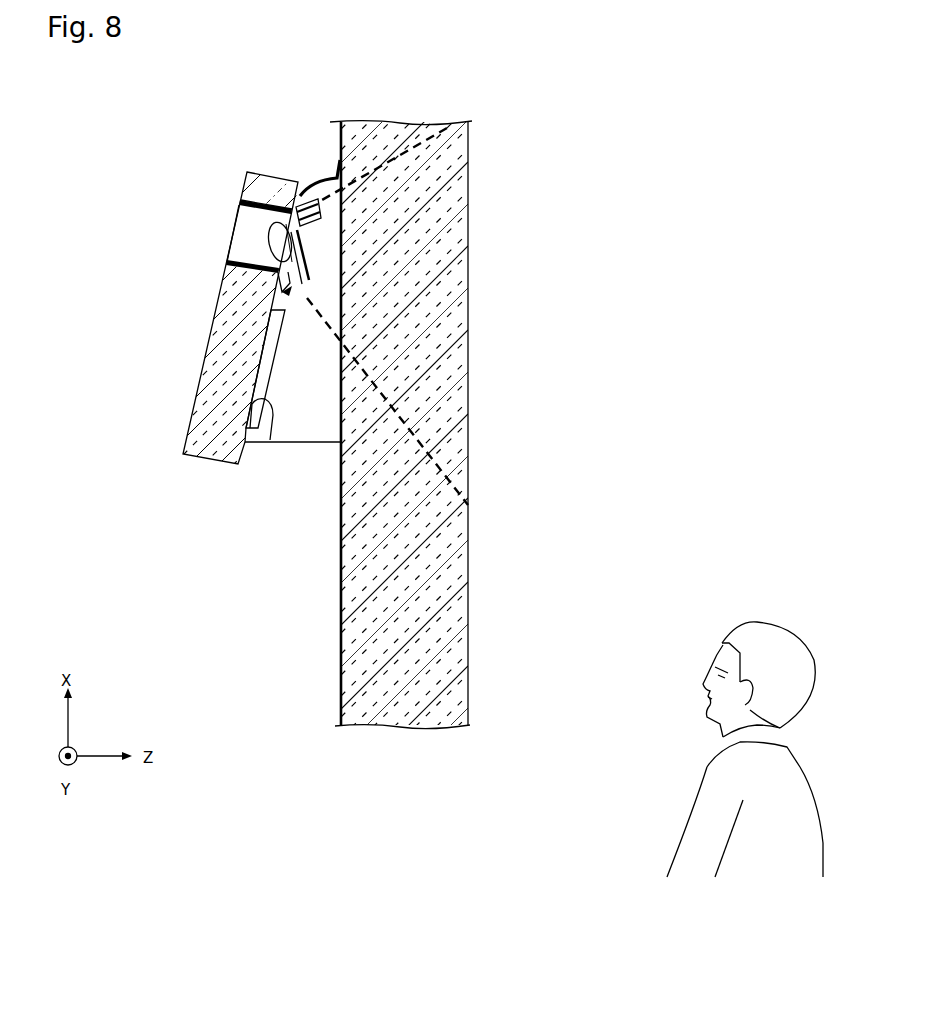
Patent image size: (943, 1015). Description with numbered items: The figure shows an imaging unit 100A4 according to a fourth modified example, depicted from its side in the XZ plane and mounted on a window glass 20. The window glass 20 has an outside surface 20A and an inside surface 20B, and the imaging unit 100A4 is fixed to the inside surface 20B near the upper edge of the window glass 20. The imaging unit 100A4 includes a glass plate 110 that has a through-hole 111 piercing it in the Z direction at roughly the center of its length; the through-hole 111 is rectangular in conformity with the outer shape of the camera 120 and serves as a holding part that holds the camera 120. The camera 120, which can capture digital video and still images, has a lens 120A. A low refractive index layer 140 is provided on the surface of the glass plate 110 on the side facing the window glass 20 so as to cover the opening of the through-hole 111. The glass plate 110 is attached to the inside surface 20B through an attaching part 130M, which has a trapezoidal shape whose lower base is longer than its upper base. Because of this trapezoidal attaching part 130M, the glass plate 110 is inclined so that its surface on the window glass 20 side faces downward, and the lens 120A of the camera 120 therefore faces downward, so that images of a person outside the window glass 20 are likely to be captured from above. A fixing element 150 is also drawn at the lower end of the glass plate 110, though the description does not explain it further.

The imaging unit 100A4 is at (218, 173).
The camera 120 is at (245, 232).
The through-hole 111 is at (278, 272).
The glass plate 110 is at (197, 412).
The fixing member 150 is at (270, 440).
The low refractive index layer 140 is at (320, 222).
The lens 120A is at (282, 242).
The attaching part 130M is at (305, 407).
The window glass 20 is at (457, 582).
The outside surface 20A is at (468, 648).
The inside surface 20B is at (341, 674).